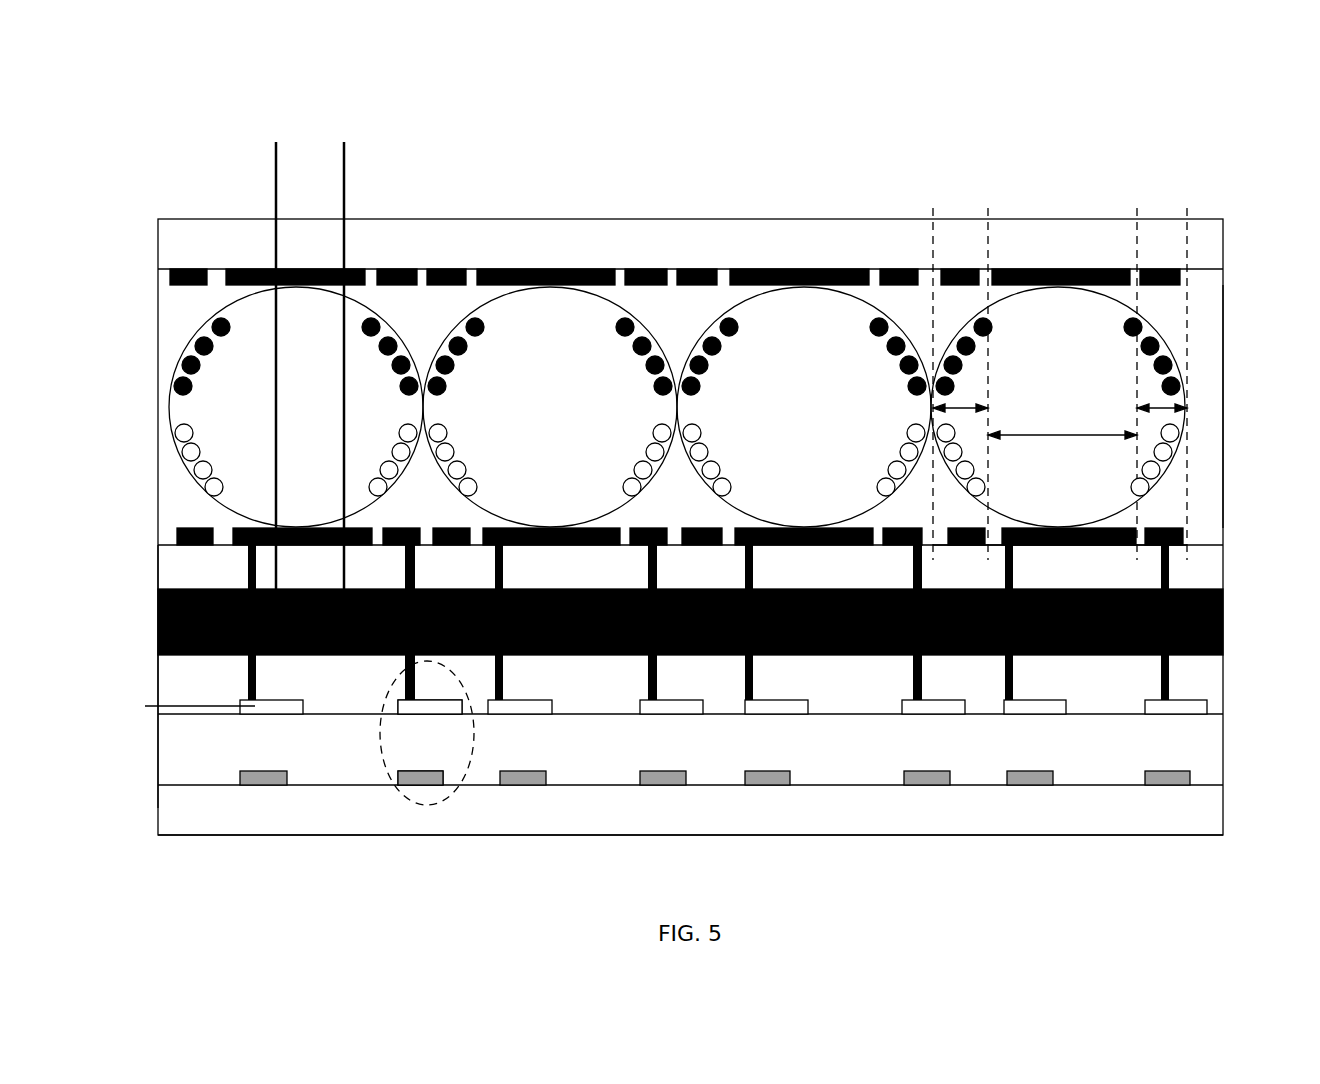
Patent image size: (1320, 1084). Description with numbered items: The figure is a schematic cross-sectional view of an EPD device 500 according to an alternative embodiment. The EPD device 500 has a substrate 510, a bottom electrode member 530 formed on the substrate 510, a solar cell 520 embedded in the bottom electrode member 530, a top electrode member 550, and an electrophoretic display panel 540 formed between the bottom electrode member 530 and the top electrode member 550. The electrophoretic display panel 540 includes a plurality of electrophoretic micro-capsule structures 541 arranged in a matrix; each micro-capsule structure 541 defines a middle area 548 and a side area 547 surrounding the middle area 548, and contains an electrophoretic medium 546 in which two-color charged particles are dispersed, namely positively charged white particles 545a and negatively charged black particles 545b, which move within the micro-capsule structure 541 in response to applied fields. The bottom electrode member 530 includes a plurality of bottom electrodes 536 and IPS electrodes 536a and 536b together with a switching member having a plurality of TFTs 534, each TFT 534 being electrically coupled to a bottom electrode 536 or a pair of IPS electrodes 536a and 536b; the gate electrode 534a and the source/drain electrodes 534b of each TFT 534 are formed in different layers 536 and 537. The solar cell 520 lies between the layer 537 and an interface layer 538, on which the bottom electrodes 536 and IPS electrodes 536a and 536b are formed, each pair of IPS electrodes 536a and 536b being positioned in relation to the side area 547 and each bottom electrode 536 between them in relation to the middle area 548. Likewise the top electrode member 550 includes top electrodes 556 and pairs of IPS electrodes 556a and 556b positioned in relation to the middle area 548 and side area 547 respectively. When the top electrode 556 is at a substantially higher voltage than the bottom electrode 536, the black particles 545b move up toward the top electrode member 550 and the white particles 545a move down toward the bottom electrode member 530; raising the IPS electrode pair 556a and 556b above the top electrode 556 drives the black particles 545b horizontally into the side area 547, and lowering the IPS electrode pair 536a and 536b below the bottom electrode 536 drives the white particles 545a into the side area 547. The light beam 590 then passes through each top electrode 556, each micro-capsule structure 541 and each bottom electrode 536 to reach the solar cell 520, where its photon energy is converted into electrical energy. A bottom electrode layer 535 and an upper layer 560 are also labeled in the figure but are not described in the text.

The EPD device 500 is at (677, 73).
The substrate 510 is at (1175, 815).
The solar cell 520 is at (1236, 592).
The bottom electrode member 530 is at (148, 544).
The TFT 534 is at (380, 733).
The gate electrode 534a is at (422, 780).
The source/drain electrodes 534b is at (444, 707).
The pixel electrode 535 is at (1212, 533).
The bottom electrode 536 is at (1192, 755).
The IPS electrode 536a is at (962, 545).
The IPS electrode 536b is at (1148, 545).
The layer 537 is at (1195, 688).
The interface layer 538 is at (1195, 567).
The electrophoretic display panel 540 is at (1236, 295).
The electrophoretic micro-capsule structure 541 is at (325, 345).
The white particles 545a is at (640, 468).
The black particles 545b is at (640, 345).
The electrophoretic medium 546 is at (282, 496).
The side area 547 is at (960, 404).
The middle area 548 is at (1062, 423).
The top electrode member 550 is at (1202, 276).
The top electrode 556 is at (1022, 269).
The IPS electrode 556a is at (955, 269).
The IPS electrode 556b is at (1162, 269).
The top substrate 560 is at (1195, 237).
The light beam 590 is at (310, 321).